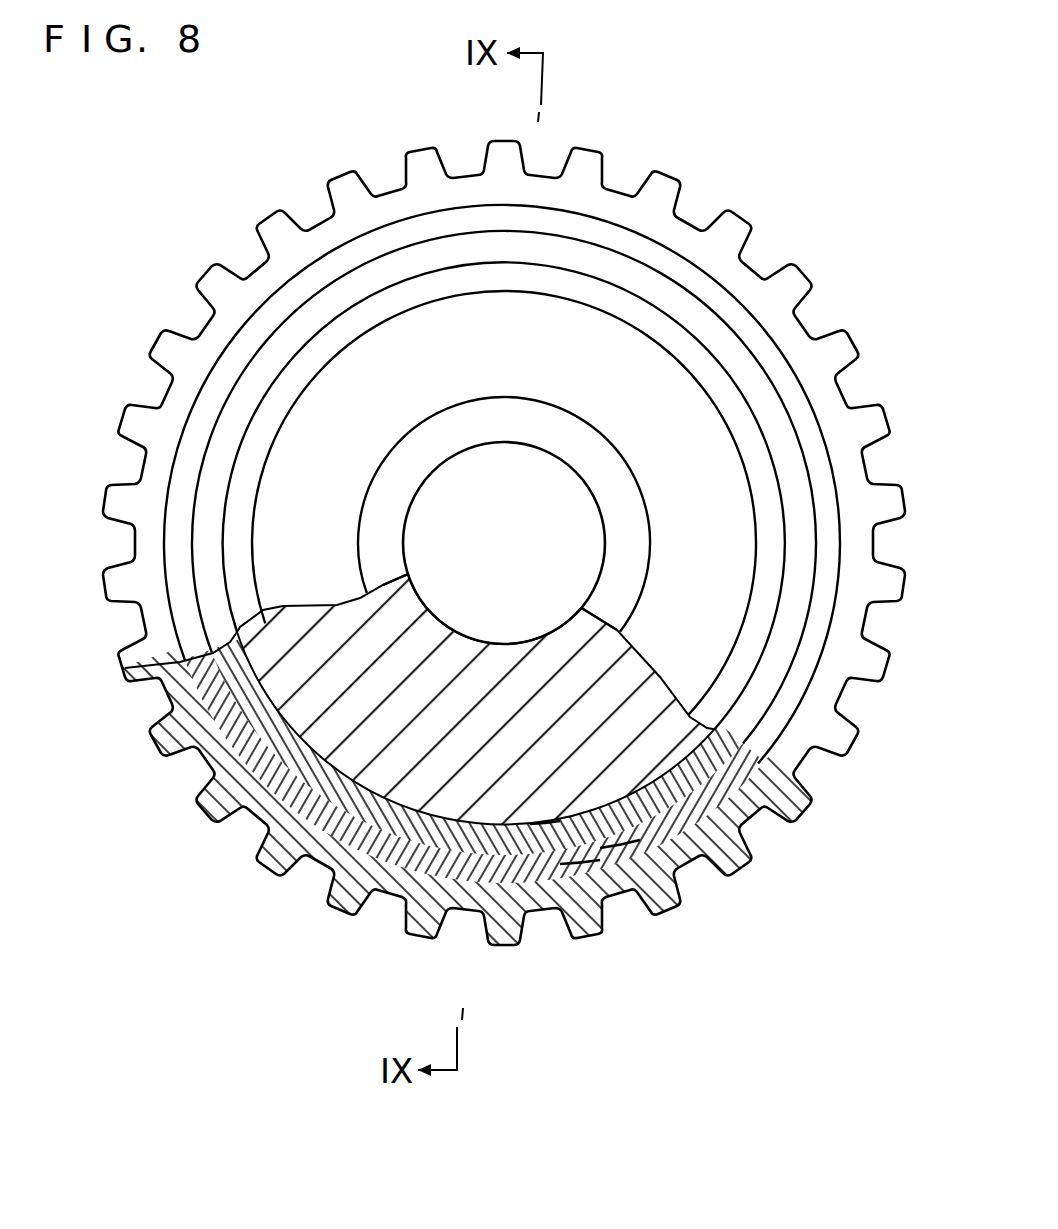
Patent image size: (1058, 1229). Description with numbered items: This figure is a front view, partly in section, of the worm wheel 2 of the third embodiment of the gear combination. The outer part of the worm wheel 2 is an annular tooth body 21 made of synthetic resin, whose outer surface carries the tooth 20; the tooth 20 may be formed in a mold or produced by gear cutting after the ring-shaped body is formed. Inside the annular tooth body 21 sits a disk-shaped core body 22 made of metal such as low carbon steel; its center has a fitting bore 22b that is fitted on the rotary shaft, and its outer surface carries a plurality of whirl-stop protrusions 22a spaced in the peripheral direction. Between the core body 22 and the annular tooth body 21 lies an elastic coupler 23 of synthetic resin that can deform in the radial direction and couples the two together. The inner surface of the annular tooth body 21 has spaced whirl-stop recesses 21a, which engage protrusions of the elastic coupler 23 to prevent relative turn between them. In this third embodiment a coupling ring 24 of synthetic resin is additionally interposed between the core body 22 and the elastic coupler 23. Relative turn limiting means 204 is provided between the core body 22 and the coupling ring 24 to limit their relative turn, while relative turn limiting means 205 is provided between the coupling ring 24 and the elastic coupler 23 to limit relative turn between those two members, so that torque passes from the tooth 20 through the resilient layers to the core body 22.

The worm wheel 2 is at (768, 856).
The tooth 20 is at (640, 897).
The annular tooth body 21 is at (632, 897).
The whirl-stop recesses 21a is at (538, 915).
The core body 22 is at (282, 858).
The whirl-stop protrusions 22a is at (483, 947).
The fitting bore 22b is at (470, 634).
The elastic coupler 23 is at (427, 870).
The coupling ring 24 is at (387, 868).
The relative turn limiting means 204 is at (578, 945).
The relative turn limiting means 205 is at (622, 905).